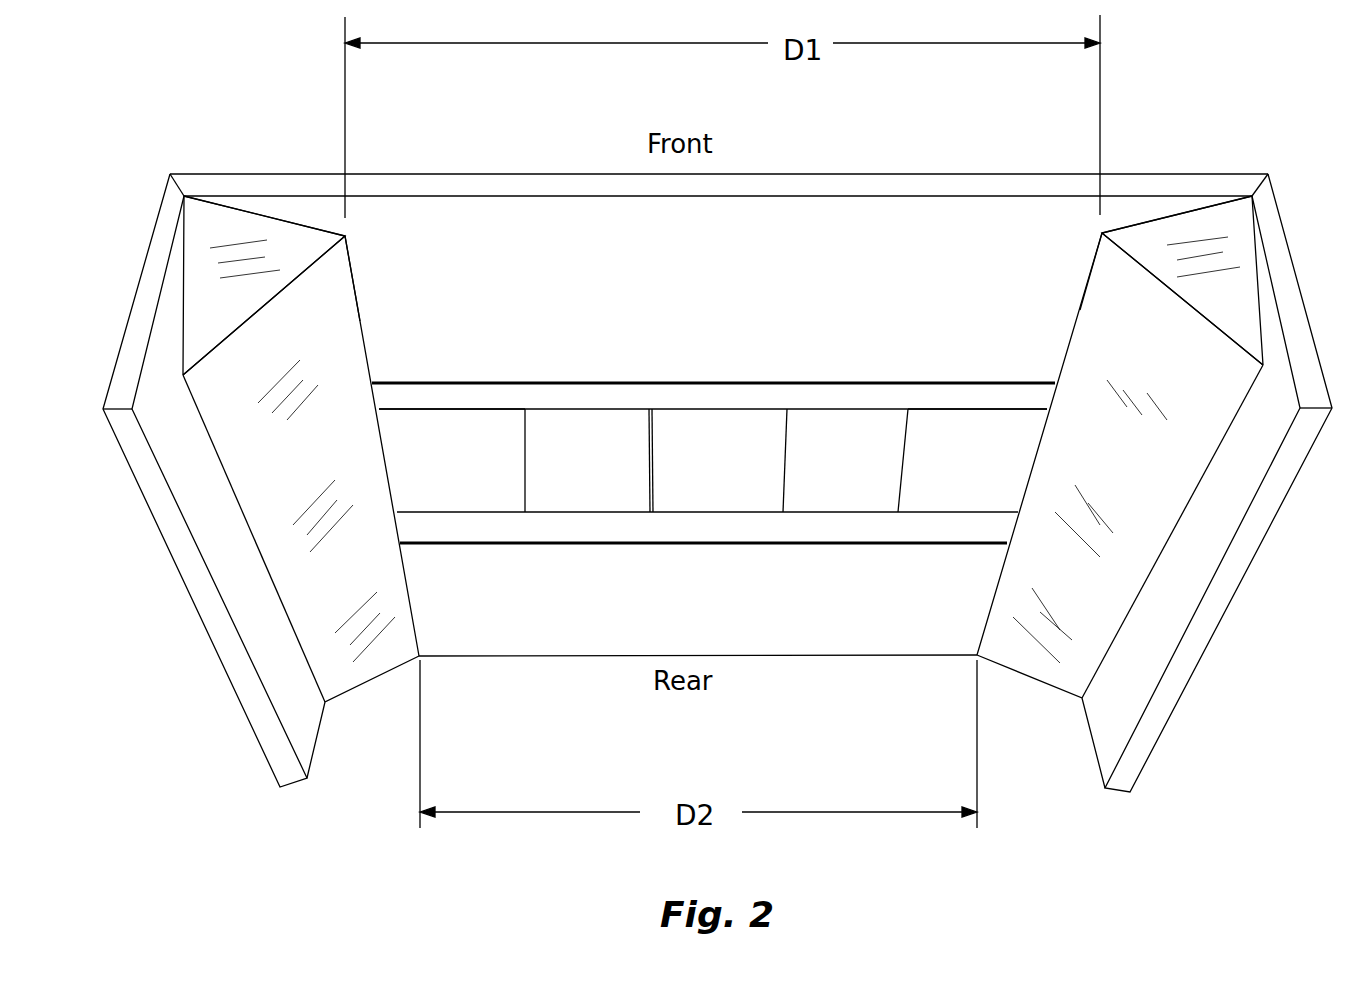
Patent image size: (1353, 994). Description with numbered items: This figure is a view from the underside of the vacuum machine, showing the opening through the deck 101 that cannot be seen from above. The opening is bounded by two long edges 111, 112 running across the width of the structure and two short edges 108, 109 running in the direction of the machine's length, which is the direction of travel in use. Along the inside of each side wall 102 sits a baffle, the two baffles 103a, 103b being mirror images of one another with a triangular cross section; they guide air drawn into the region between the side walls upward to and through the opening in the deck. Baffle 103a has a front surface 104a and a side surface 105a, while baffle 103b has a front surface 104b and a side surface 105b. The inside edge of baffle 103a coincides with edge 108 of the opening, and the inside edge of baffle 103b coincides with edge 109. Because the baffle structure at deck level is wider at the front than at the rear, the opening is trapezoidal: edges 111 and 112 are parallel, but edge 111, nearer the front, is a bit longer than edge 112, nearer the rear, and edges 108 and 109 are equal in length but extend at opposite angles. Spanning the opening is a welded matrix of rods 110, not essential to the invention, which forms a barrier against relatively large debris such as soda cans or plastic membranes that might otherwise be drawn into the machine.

The deck 101 is at (823, 173).
The side wall 102 is at (230, 645).
The baffle 103a is at (354, 248).
The baffle 103b is at (1098, 260).
The front surface 104a is at (263, 237).
The front surface 104b is at (1167, 233).
The side surface 105a is at (332, 372).
The side surface 105b is at (1095, 365).
The short edge 108 is at (380, 433).
The short edge 109 is at (1042, 446).
The welded matrix of rods 110 is at (640, 470).
The long edge 111 is at (670, 380).
The long edge 112 is at (673, 545).